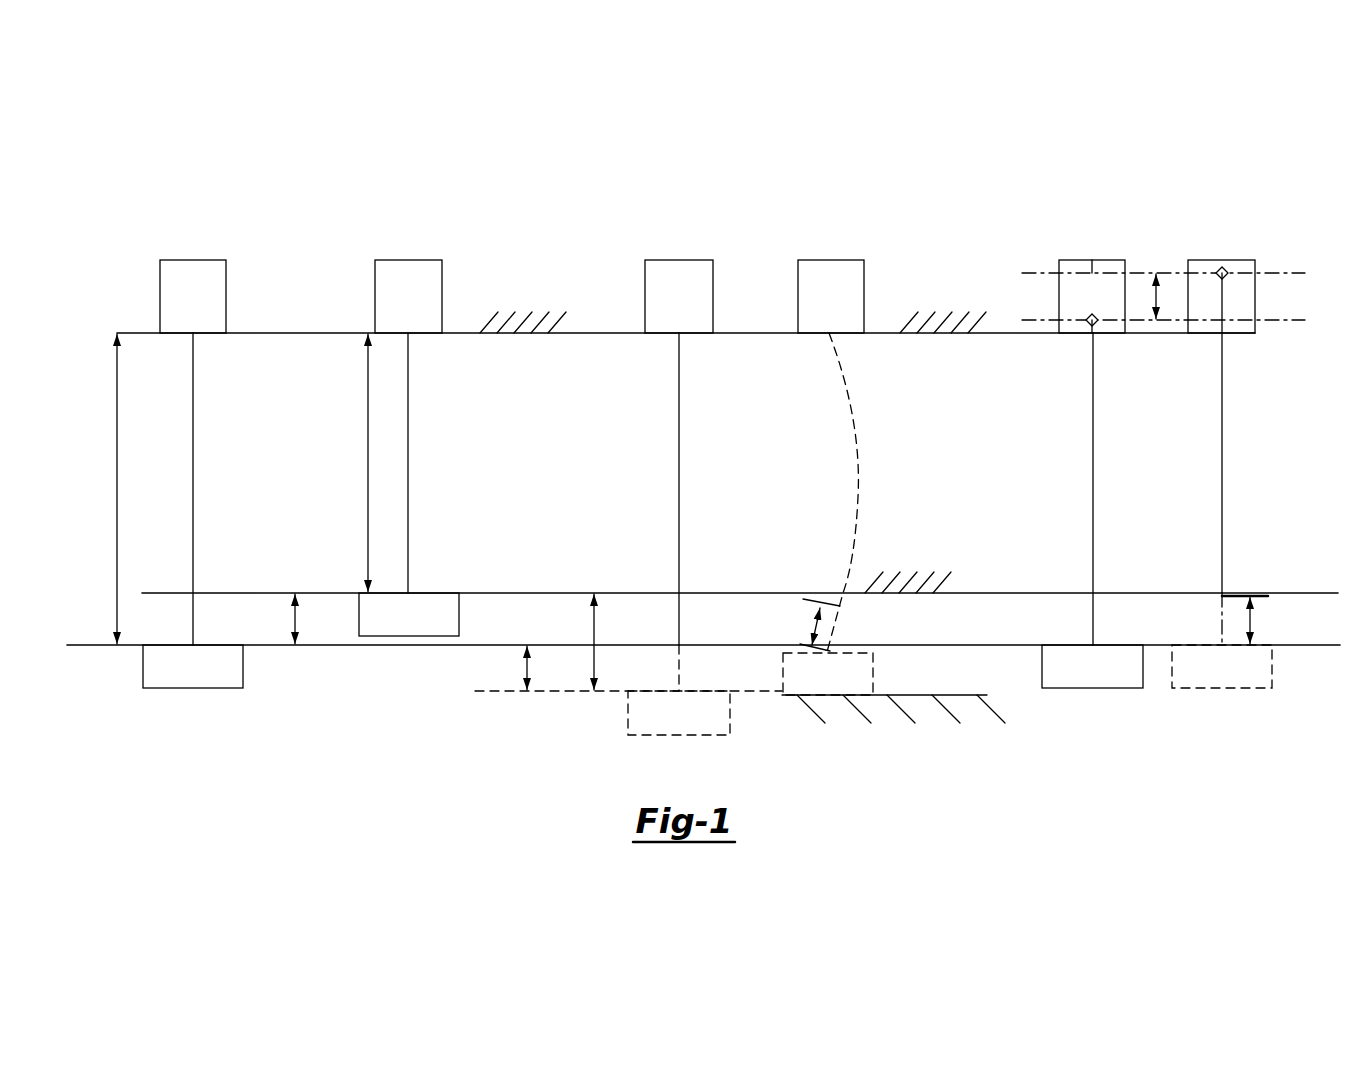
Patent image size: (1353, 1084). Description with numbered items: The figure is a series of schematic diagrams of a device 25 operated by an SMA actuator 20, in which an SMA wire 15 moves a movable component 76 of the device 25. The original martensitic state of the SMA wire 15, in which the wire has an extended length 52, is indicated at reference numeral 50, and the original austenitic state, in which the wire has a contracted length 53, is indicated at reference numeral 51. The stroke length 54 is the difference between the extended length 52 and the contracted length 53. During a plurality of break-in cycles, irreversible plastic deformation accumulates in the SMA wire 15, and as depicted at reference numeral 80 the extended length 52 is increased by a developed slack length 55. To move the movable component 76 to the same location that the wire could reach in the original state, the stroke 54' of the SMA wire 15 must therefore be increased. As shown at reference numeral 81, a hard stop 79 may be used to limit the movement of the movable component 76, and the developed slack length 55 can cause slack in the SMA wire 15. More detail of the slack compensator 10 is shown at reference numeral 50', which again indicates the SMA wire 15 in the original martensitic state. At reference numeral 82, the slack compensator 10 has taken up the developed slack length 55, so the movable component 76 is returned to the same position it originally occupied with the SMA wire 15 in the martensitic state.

The slack compensator 10 is at (193, 259).
The SMA wire 15 is at (194, 463).
The SMA actuator 20 is at (148, 318).
The device 25 is at (148, 240).
The original martensitic state 50 is at (263, 502).
The original martensitic state with slack compensator 50' is at (1164, 503).
The original austenitic state 51 is at (462, 530).
The extended length 52 is at (116, 463).
The contracted length 53 is at (367, 463).
The stroke length 54 is at (264, 619).
The increased stroke 54' is at (560, 642).
The developed slack length 55 is at (1155, 296).
The movable component 76 is at (196, 680).
The hard stop 79 is at (905, 712).
The post-break-in state 80 is at (733, 530).
The slack state with hard stop 81 is at (912, 450).
The slack-compensated state 82 is at (1275, 530).